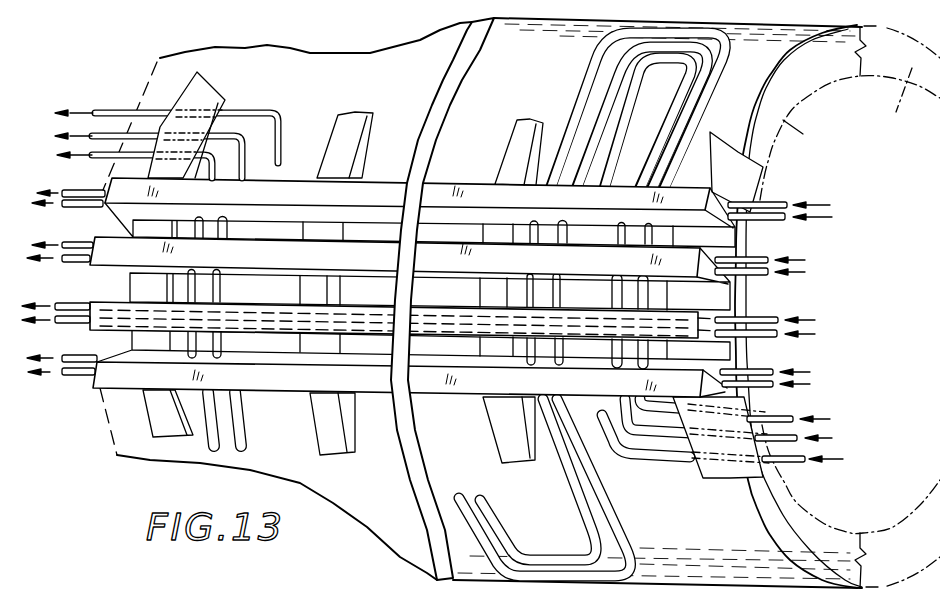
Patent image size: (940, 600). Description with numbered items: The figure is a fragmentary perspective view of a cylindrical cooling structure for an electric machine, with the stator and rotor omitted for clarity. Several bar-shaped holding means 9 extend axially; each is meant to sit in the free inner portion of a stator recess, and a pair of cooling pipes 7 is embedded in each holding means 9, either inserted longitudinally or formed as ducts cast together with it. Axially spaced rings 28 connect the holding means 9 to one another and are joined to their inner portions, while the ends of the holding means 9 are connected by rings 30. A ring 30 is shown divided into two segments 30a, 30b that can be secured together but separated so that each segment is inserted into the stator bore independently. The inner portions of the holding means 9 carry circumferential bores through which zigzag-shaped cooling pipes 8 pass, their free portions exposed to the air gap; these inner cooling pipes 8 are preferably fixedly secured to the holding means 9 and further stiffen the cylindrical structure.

The cooling pipes 7 is at (771, 317).
The zigzag-shaped cooling pipes 8 is at (600, 56).
The bar-shaped holding means 9 is at (447, 194).
The rings 28 is at (347, 124).
The rings 30 is at (796, 95).
The segment 30a is at (813, 138).
The segment 30b is at (908, 103).